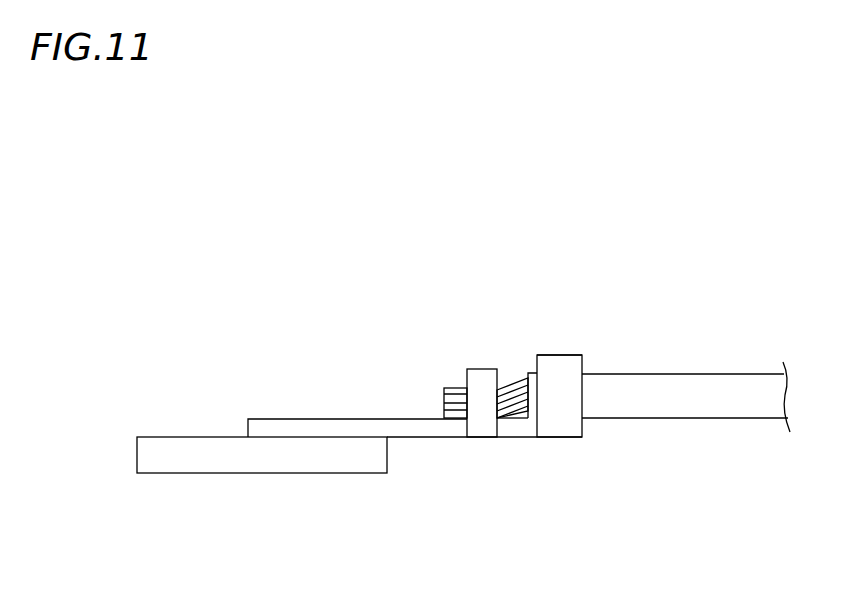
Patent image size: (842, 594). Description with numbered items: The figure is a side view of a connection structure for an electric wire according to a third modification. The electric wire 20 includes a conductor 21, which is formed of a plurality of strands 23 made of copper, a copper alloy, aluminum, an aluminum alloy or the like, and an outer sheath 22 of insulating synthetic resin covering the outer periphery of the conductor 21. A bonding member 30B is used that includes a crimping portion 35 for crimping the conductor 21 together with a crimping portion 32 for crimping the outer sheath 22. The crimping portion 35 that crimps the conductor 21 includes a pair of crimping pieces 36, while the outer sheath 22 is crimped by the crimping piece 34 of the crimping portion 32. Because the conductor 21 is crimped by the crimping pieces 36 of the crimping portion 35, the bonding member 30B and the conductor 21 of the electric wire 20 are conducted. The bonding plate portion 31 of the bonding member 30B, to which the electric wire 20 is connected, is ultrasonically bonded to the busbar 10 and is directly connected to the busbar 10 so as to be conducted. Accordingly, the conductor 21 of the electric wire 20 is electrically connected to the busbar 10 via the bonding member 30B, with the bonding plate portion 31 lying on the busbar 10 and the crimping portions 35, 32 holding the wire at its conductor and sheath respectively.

The busbar 10 is at (197, 474).
The bonding plate portion 31 is at (344, 423).
The bonding member 30B is at (432, 439).
The crimping pieces 36 is at (480, 368).
The crimping portion 35 is at (482, 428).
The strands 23 is at (460, 395).
The conductor 21 is at (511, 383).
The crimping piece 34 is at (560, 358).
The crimping portion 32 is at (557, 428).
The electric wire 20 is at (689, 373).
The outer sheath 22 is at (632, 420).